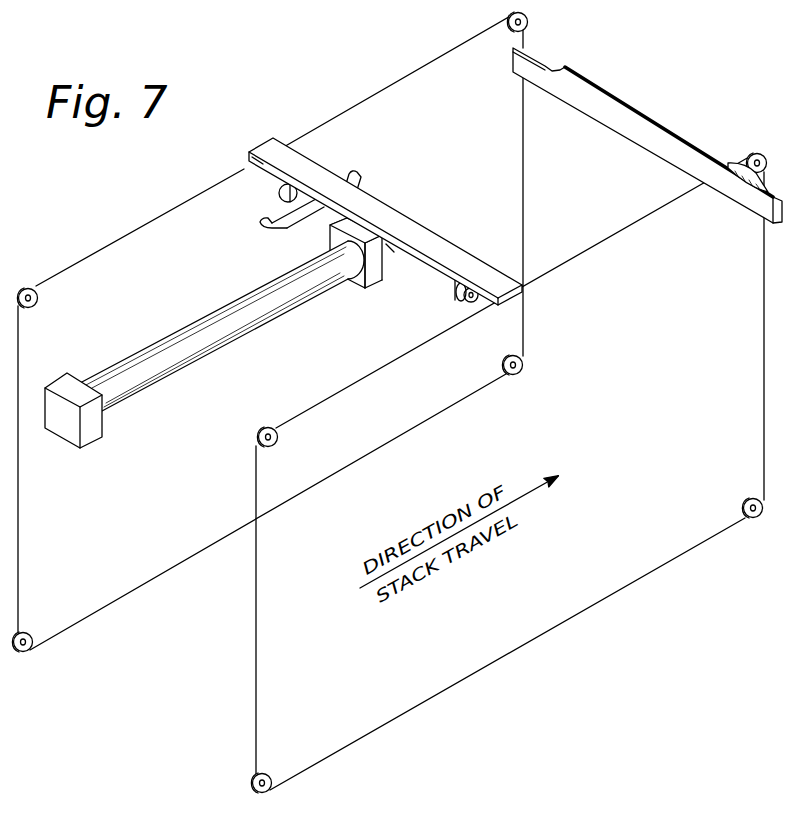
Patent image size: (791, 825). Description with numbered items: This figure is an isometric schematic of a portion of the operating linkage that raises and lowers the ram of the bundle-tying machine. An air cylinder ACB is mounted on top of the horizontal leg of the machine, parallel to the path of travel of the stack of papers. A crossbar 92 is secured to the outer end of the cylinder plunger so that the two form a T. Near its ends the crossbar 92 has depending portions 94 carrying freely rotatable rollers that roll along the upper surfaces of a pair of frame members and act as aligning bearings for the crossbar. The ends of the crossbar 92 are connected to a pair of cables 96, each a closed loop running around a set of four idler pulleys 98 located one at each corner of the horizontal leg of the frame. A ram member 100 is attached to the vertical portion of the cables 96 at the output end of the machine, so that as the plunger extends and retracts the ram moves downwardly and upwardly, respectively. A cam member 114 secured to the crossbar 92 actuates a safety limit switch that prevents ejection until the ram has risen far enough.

The crossbar 92 is at (424, 232).
The depending portions 94 is at (280, 193).
The cables 96 is at (397, 93).
The idler pulleys 98 is at (530, 22).
The ram member 100 is at (641, 112).
The cam member 114 is at (258, 223).
The air cylinder ACB is at (197, 320).